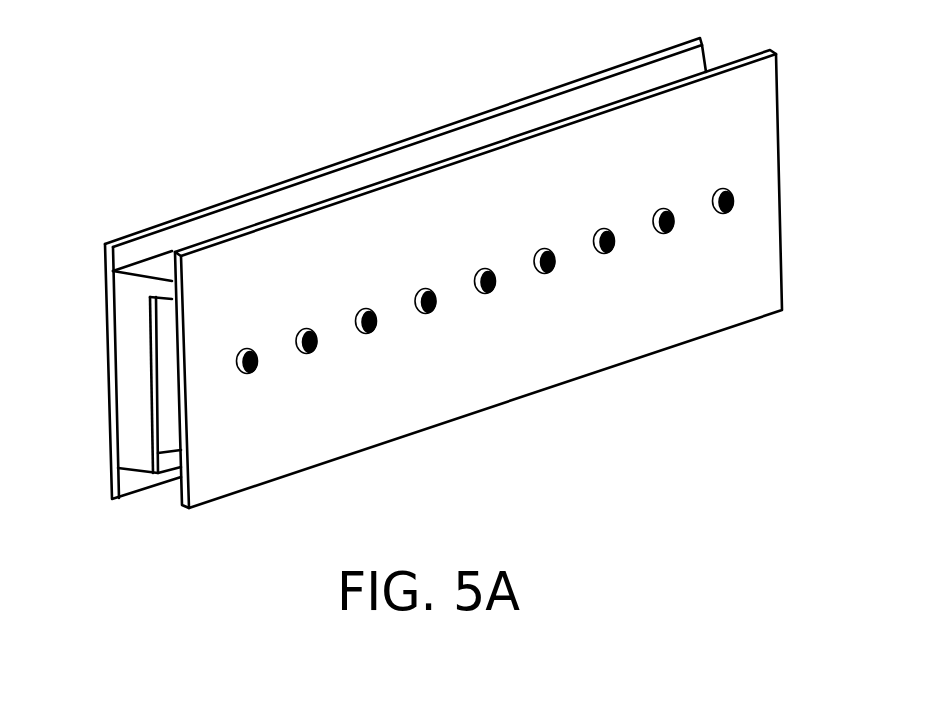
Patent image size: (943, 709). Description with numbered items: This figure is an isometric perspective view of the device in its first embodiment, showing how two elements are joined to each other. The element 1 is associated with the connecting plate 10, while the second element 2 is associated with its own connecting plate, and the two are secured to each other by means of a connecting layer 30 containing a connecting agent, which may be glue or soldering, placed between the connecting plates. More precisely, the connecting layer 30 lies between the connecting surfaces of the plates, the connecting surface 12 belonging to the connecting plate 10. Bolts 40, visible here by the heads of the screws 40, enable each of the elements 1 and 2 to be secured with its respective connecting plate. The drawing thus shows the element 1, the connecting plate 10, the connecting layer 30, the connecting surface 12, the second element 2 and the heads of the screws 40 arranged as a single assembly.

The element 1 is at (419, 293).
The connecting plate 10 is at (132, 343).
The element 2 is at (692, 315).
The bolts 40 is at (535, 252).
The connecting layer 30 is at (152, 388).
The connecting surface 12 is at (172, 452).